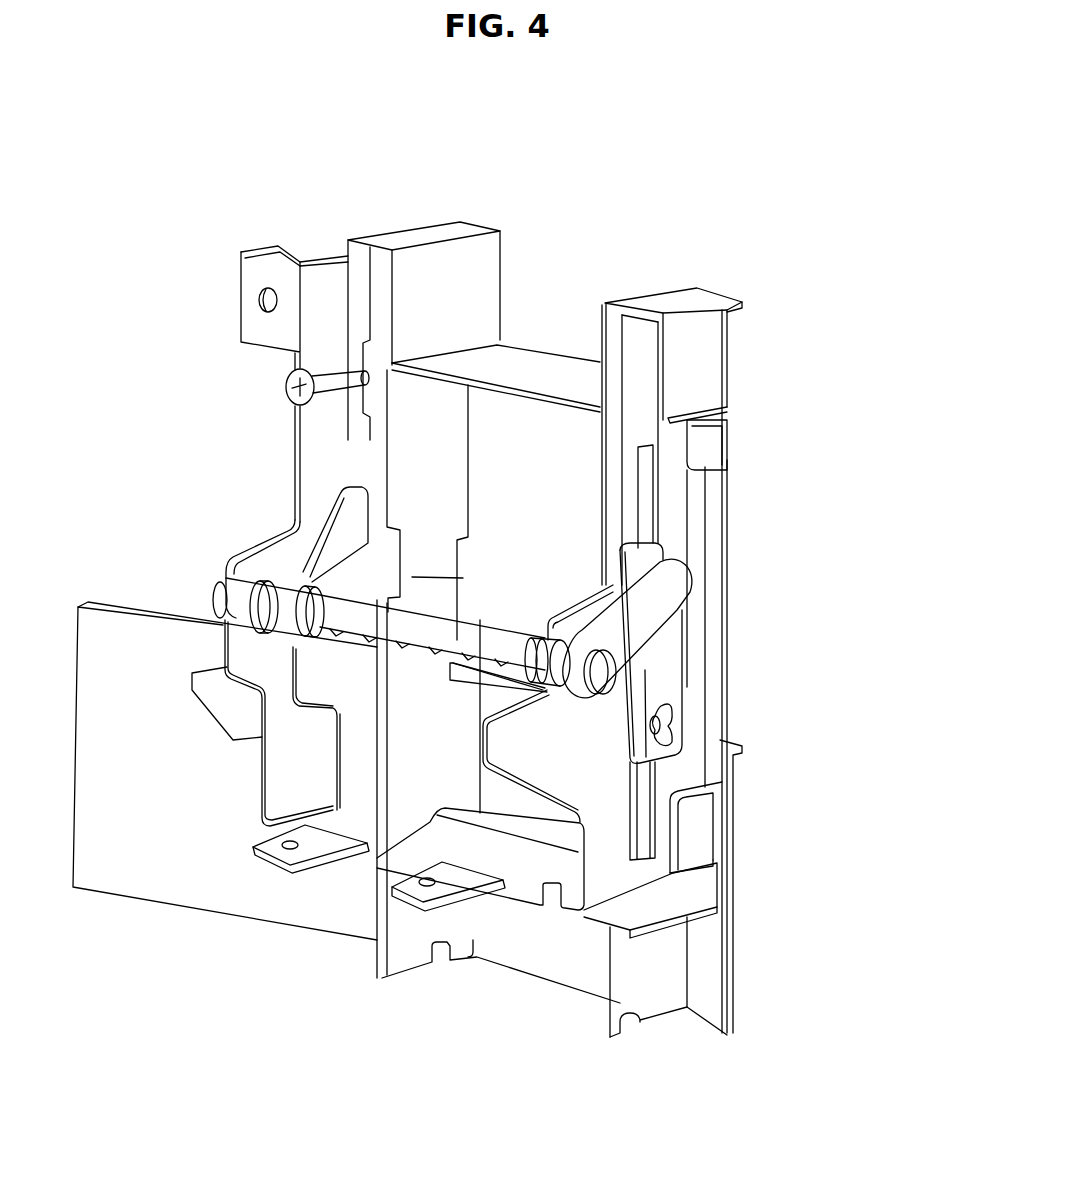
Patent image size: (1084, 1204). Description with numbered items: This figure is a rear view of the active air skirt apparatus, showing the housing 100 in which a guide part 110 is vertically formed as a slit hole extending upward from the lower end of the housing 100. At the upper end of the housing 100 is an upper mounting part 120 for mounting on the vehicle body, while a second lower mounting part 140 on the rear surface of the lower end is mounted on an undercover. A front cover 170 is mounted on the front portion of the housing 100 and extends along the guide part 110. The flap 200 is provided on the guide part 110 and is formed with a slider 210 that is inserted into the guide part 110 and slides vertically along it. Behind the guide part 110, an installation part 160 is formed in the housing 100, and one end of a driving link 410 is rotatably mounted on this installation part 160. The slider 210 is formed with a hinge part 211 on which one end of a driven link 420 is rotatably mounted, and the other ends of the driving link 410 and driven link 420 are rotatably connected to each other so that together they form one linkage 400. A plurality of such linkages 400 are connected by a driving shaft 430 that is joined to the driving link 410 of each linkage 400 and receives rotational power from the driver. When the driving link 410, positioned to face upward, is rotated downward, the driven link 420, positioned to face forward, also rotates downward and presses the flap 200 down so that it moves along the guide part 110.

The housing 100 is at (733, 265).
The guide part 110 is at (390, 723).
The upper mounting part 120 is at (262, 277).
The second lower mounting part 140 is at (278, 853).
The installation part 160 is at (243, 552).
The front cover 170 is at (420, 452).
The flap 200 is at (137, 852).
The slider 210 is at (315, 578).
The hinge part 211 is at (677, 727).
The linkage 400 is at (855, 612).
The driving link 410 is at (673, 593).
The driven link 420 is at (672, 668).
The driving shaft 430 is at (478, 642).